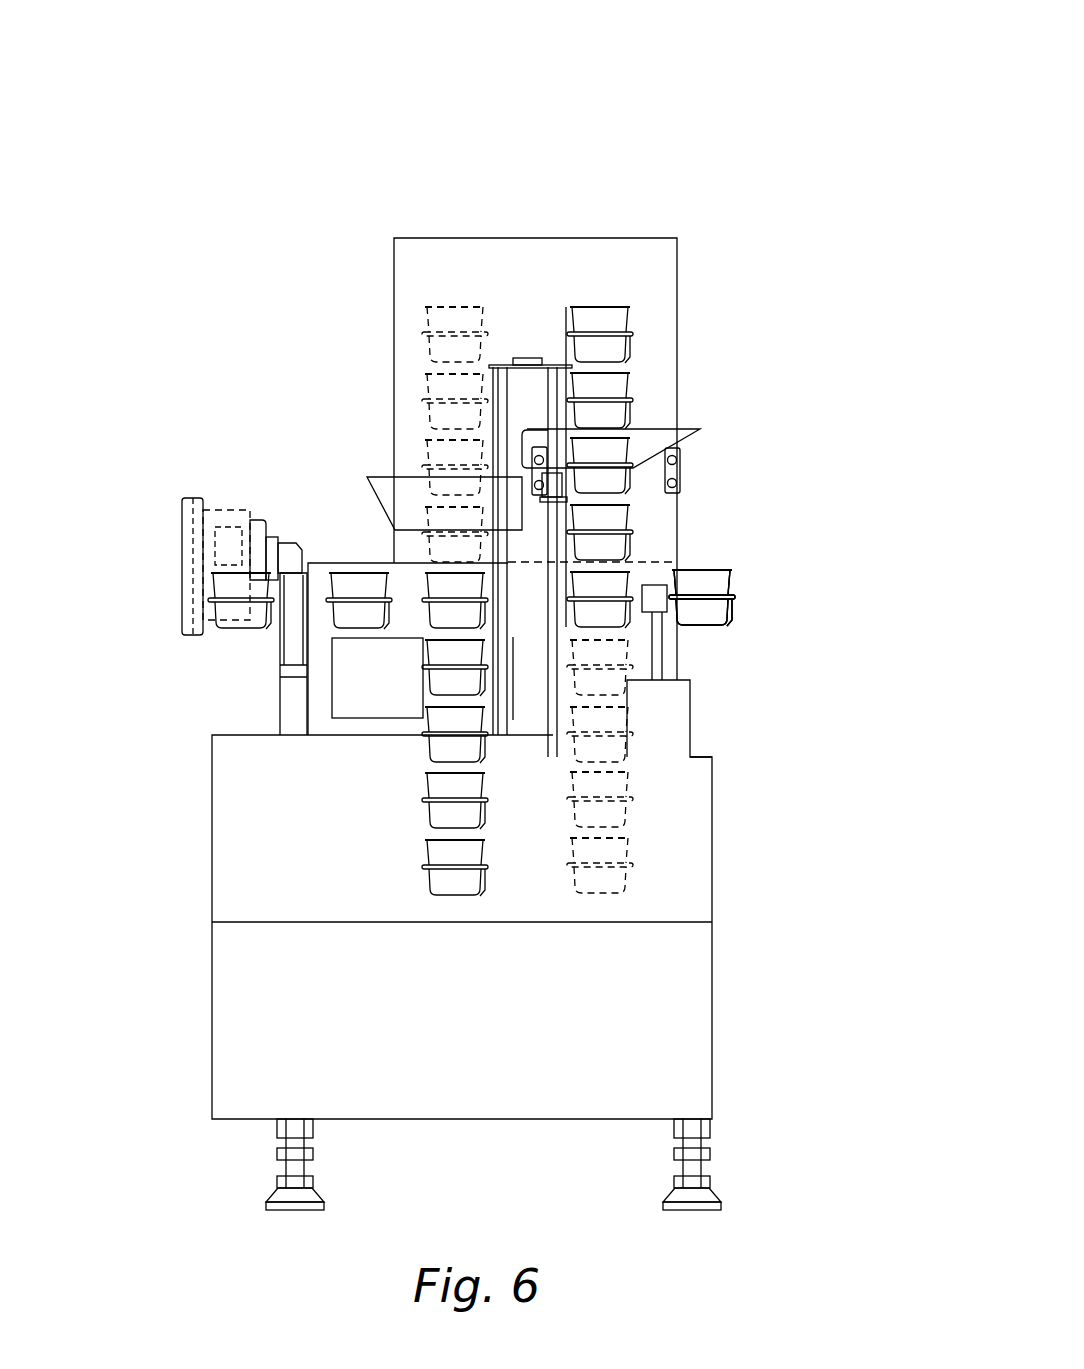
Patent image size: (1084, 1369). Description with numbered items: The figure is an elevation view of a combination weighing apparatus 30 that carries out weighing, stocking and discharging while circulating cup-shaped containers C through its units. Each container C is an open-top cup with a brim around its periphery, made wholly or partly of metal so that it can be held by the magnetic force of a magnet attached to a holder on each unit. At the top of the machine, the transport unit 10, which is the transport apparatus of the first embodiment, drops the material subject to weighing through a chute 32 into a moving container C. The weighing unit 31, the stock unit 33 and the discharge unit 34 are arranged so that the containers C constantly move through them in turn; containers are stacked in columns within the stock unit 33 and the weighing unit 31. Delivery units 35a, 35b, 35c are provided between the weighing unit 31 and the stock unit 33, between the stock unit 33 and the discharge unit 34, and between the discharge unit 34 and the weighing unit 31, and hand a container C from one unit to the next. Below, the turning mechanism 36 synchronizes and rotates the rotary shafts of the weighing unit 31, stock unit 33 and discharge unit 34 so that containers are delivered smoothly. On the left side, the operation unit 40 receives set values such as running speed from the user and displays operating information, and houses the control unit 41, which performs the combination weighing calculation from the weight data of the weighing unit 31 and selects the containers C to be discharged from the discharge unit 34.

The combination weighing apparatus 30 is at (602, 107).
The stock unit 33 is at (547, 275).
The container C is at (594, 317).
The transport unit 10 is at (662, 418).
The chute 32 is at (405, 477).
The weighing unit 31 is at (343, 548).
The discharge unit 34 is at (725, 547).
The delivery unit 35a is at (750, 566).
The delivery unit 35b is at (702, 598).
The delivery unit 35c is at (702, 598).
The operation unit 40 is at (190, 583).
The control unit 41 is at (227, 510).
The turning mechanism 36 is at (657, 1025).